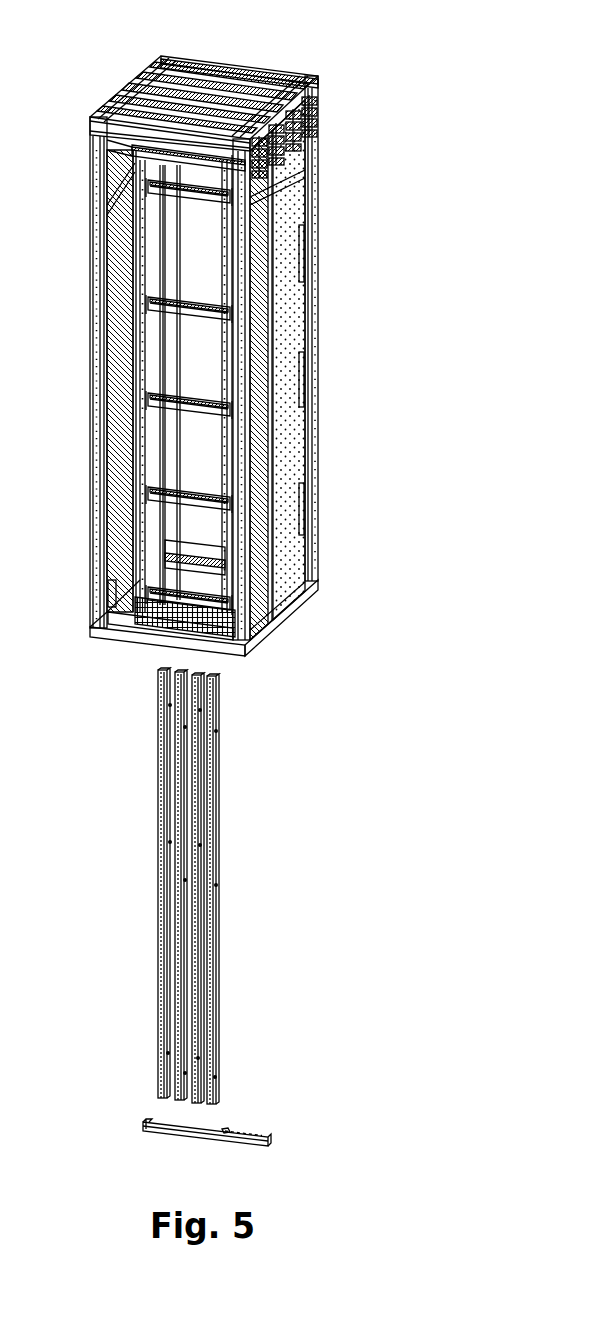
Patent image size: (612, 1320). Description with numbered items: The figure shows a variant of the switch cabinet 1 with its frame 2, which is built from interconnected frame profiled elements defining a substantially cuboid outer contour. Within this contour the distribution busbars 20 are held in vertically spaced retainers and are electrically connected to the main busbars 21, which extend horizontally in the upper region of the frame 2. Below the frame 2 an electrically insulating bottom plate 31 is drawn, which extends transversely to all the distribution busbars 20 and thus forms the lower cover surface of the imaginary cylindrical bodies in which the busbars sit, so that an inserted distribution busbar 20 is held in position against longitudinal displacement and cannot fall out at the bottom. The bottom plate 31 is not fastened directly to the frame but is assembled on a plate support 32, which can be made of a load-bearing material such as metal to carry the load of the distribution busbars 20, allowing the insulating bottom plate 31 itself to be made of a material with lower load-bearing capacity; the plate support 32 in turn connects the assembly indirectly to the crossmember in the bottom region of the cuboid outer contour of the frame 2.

The switch cabinet 1 is at (369, 48).
The frame 2 is at (322, 426).
The distribution busbars 20 is at (212, 760).
The main busbars 21 is at (293, 143).
The insulating bottom plate 31 is at (168, 1122).
The plate support 32 is at (250, 1135).